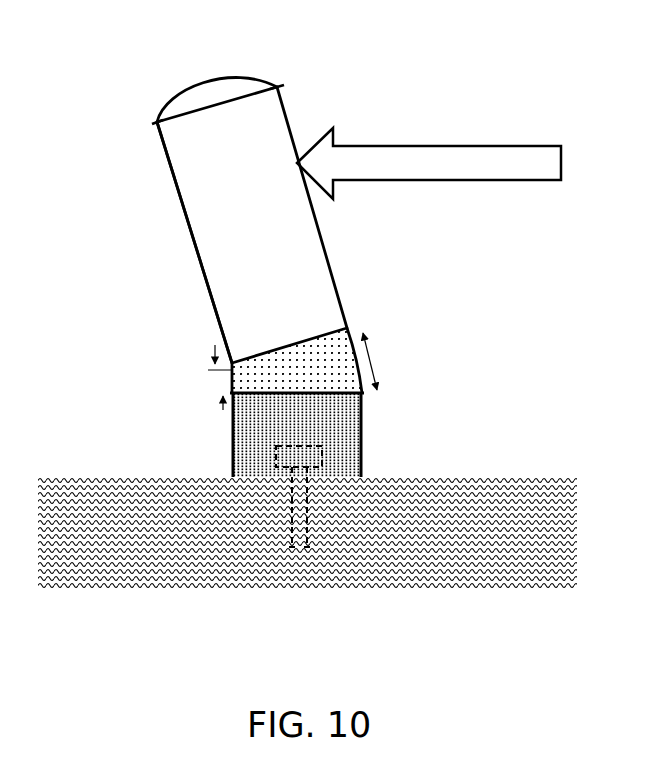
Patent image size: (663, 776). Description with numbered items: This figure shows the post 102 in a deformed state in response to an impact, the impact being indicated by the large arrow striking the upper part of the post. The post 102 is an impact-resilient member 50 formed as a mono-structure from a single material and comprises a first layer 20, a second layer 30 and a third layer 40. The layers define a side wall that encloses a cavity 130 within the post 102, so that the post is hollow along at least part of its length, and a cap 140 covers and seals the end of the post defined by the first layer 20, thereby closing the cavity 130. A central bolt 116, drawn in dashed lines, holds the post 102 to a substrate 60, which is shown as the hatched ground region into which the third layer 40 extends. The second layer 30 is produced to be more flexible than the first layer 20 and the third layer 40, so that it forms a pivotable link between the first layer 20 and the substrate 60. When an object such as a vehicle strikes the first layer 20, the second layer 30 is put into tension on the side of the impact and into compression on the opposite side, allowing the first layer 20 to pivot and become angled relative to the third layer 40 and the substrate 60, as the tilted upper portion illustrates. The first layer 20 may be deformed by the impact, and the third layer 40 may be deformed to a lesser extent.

The first layer 20 is at (313, 285).
The second layer 30 is at (333, 343).
The third layer 40 is at (347, 443).
The impact-resilient member 50 is at (278, 87).
The substrate 60 is at (520, 498).
The second example of the impact-resilient post 102 is at (160, 128).
The central bolt 116 is at (300, 530).
The cavity 130 is at (218, 242).
The cap 140 is at (213, 93).